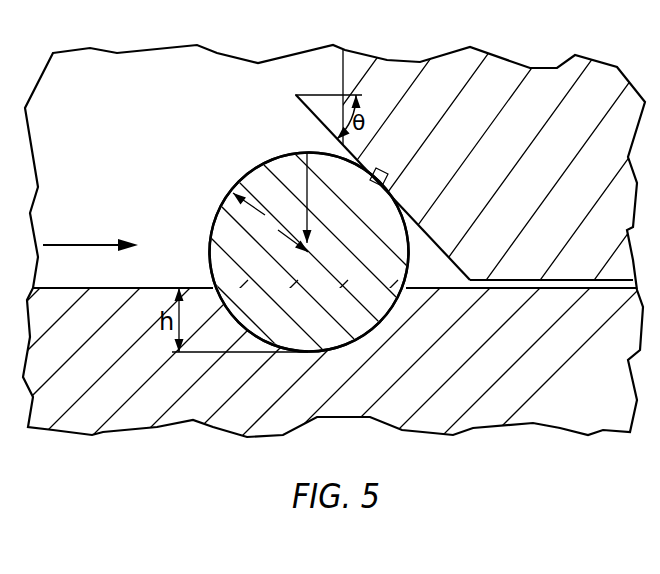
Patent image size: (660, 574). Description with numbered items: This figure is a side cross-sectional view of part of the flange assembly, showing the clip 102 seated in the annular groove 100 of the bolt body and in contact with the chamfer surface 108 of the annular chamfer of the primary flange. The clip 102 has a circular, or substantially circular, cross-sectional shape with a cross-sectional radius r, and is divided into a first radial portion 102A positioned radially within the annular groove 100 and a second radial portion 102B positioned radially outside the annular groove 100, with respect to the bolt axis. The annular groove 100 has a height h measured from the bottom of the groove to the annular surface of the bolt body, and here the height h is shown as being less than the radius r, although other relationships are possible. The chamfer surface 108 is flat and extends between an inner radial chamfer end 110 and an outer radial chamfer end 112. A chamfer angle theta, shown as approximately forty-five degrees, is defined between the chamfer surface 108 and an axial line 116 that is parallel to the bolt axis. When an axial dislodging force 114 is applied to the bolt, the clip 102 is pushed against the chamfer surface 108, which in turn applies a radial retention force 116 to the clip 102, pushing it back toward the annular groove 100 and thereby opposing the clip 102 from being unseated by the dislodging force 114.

The annular groove 100 is at (380, 333).
The clip 102 is at (220, 173).
The first radial portion 102A is at (338, 303).
The second radial portion 102B is at (265, 183).
The chamfer surface 108 is at (448, 257).
The inner radial chamfer end 110 is at (477, 277).
The outer radial chamfer end 112 is at (345, 143).
The axial dislodging force 114 is at (88, 245).
The radial retention force / axial line 116 is at (307, 188).